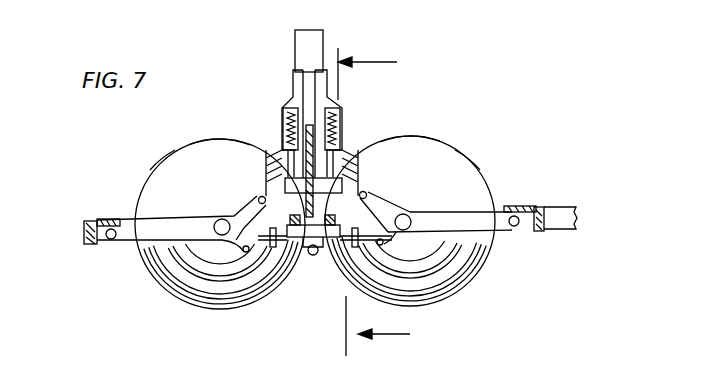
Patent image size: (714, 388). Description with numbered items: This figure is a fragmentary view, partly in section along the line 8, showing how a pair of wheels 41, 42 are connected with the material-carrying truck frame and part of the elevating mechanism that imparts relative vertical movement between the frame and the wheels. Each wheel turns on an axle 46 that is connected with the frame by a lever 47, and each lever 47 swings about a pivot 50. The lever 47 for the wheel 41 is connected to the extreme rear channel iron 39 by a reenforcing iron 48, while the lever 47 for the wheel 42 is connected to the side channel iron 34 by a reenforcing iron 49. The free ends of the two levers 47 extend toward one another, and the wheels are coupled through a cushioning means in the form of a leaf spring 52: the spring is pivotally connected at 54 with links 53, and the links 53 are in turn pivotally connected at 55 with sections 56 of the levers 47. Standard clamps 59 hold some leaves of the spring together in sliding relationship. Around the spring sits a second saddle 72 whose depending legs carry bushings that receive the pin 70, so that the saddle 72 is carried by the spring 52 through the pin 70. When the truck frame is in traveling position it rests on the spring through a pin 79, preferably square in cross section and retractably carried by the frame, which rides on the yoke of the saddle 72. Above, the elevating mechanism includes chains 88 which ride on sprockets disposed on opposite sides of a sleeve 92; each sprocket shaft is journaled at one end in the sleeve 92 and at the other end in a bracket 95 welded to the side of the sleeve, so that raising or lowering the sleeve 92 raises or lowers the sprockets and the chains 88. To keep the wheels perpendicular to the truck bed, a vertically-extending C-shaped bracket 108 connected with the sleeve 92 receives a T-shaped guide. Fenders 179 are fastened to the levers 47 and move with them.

The section line 8- 8 is at (383, 202).
The channel iron 34 is at (579, 214).
The rear channel iron 39 is at (88, 220).
The wheel 41 is at (166, 264).
The wheel 42 is at (466, 270).
The axle 46 is at (224, 218).
The lever 47 is at (123, 216).
The reenforcing iron 48 is at (96, 246).
The reenforcing iron 49 is at (536, 206).
The pivot 50 is at (112, 244).
The leaf spring 52 is at (290, 250).
The link 53 is at (367, 202).
The pivotal connection 54 is at (220, 296).
The pivotal connection 55 is at (264, 192).
The lever section 56 is at (238, 150).
The clamp 59 is at (268, 302).
The pin 70 is at (317, 258).
The second saddle 72 is at (319, 290).
The pin 79 is at (352, 150).
The chain 88 is at (283, 125).
The sleeve 92 is at (325, 33).
The bracket 95 is at (292, 110).
The bracket 108 is at (301, 72).
The fender 179 is at (165, 152).